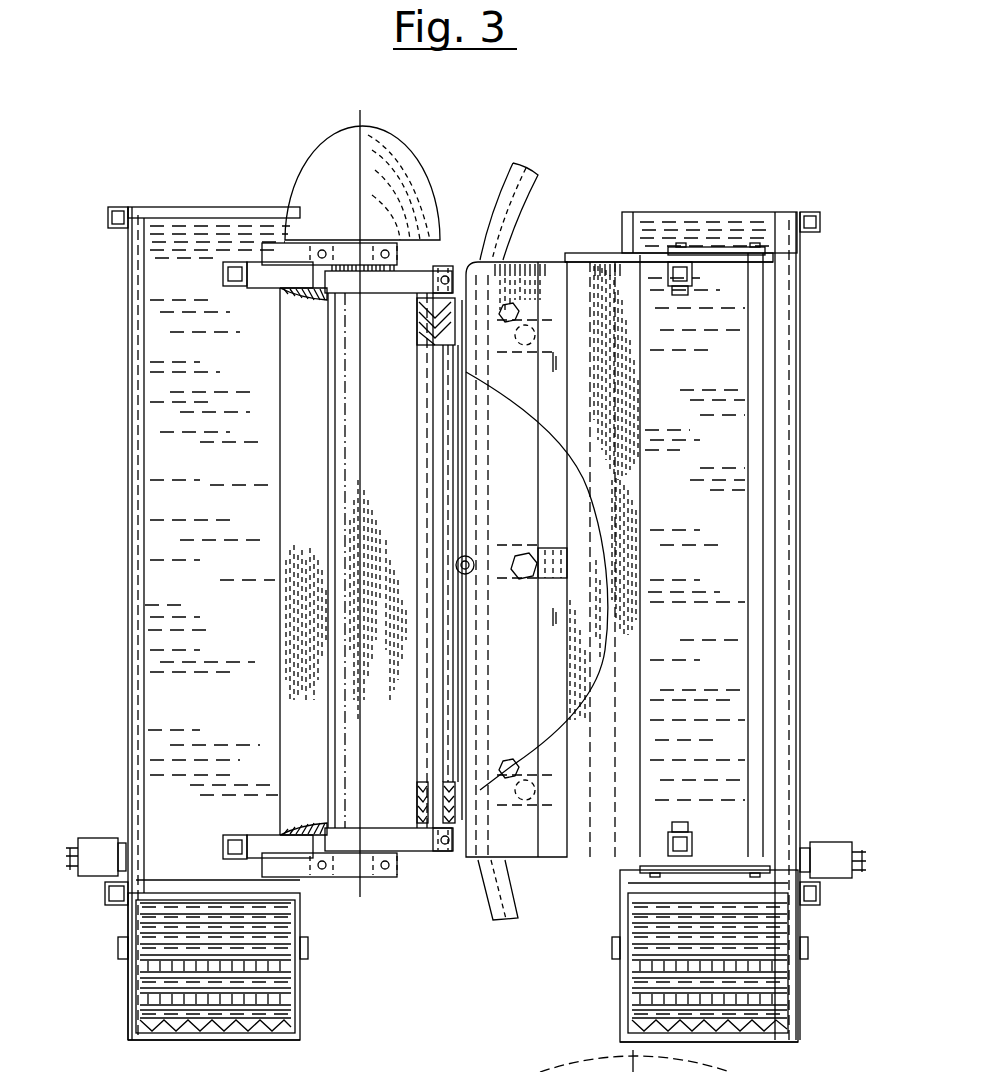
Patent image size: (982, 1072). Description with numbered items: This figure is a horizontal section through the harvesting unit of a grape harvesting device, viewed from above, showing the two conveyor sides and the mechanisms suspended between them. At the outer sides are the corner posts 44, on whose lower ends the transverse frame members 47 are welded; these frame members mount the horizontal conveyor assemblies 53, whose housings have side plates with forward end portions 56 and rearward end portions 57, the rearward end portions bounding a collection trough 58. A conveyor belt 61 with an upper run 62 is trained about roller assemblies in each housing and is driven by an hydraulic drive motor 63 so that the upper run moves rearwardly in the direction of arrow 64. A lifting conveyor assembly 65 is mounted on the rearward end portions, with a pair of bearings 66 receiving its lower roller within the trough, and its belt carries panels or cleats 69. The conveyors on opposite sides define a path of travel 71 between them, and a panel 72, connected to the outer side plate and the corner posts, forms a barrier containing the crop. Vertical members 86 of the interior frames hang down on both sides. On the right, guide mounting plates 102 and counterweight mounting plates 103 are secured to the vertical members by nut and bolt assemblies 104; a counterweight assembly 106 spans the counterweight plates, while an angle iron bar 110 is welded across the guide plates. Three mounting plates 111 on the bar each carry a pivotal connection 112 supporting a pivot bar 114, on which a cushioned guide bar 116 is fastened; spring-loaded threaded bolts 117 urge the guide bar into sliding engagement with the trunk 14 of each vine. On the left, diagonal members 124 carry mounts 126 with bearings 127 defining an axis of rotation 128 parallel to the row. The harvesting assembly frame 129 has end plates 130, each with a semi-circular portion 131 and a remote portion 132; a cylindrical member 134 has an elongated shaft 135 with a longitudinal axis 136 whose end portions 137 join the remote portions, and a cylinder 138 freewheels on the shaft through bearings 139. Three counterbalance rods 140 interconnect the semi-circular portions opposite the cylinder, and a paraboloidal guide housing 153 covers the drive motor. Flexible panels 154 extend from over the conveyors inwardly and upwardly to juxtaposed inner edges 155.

The trunk 14 is at (463, 556).
The corner posts 44 is at (108, 228).
The transverse frame member 47 is at (212, 207).
The horizontal conveyor assembly 53 is at (158, 782).
The forward end portions 56 is at (132, 207).
The rearward end portions 57 is at (128, 1000).
The collection trough 58 is at (250, 1040).
The conveyor belt 61 is at (226, 624).
The upper run 62 is at (226, 649).
The hydraulic drive motor 63 is at (82, 870).
The arrow 64 is at (192, 527).
The lifting conveyor assembly 65 is at (176, 1026).
The bearings 66 is at (118, 950).
The panels or cleats 69 is at (290, 958).
The path of travel 71 is at (468, 150).
The panel 72 is at (140, 728).
The vertical members 86 is at (223, 274).
The guide mounting plates 102 is at (652, 262).
The counterweight mounting plates 103 is at (718, 247).
The nut and bolt assemblies 104 is at (680, 295).
The counterweight assembly 106 is at (748, 434).
The angle iron bar 110 is at (575, 253).
The mounting plates 111 is at (559, 602).
The pivotal connection 112 is at (512, 314).
The pivot bar 114 is at (540, 676).
The cushioned guide bar 116 is at (520, 170).
The threaded stud or bolt 117 is at (505, 322).
The diagonal members 124 is at (268, 262).
The mount 126 is at (272, 243).
The bearing 127 is at (348, 243).
The axis of rotation 128 is at (362, 120).
The frame 129 is at (318, 596).
The end plates 130 is at (395, 293).
The semi-circular portion 131 is at (310, 300).
The remote portion 132 is at (450, 266).
The cylindrical member 134 is at (403, 535).
The elongated shaft 135 is at (432, 410).
The longitudinal axis 136 is at (440, 502).
The end portions 137 is at (443, 278).
The cylinder 138 is at (425, 448).
The bearings 139 is at (428, 340).
The counterbalance rods 140 is at (328, 528).
The guide housing 153 is at (398, 142).
The flexible panels 154 is at (326, 436).
The inner edges 155 is at (455, 742).